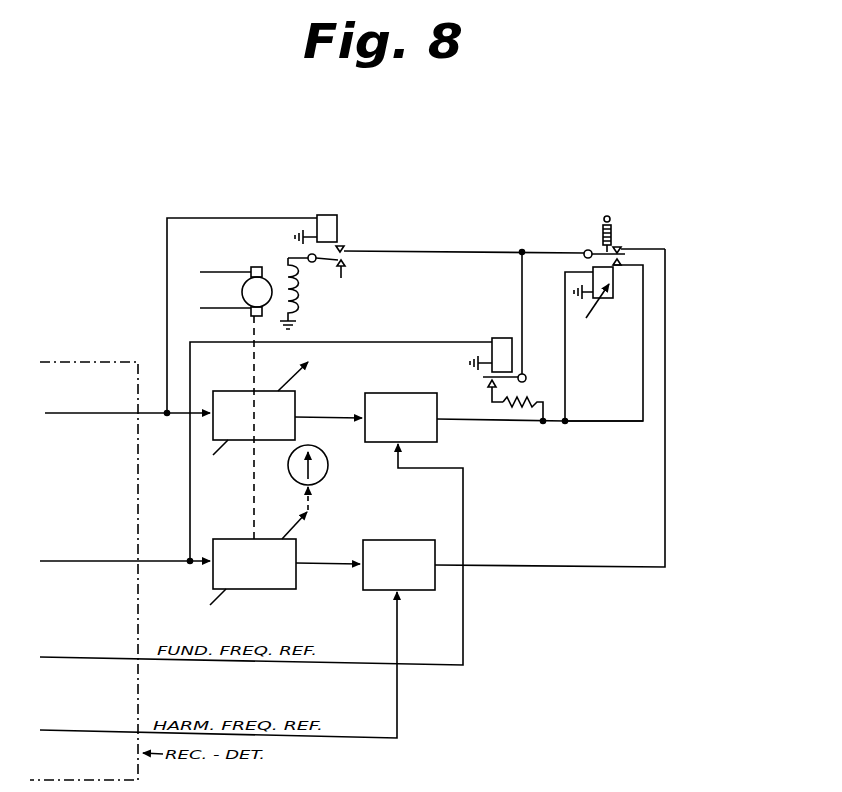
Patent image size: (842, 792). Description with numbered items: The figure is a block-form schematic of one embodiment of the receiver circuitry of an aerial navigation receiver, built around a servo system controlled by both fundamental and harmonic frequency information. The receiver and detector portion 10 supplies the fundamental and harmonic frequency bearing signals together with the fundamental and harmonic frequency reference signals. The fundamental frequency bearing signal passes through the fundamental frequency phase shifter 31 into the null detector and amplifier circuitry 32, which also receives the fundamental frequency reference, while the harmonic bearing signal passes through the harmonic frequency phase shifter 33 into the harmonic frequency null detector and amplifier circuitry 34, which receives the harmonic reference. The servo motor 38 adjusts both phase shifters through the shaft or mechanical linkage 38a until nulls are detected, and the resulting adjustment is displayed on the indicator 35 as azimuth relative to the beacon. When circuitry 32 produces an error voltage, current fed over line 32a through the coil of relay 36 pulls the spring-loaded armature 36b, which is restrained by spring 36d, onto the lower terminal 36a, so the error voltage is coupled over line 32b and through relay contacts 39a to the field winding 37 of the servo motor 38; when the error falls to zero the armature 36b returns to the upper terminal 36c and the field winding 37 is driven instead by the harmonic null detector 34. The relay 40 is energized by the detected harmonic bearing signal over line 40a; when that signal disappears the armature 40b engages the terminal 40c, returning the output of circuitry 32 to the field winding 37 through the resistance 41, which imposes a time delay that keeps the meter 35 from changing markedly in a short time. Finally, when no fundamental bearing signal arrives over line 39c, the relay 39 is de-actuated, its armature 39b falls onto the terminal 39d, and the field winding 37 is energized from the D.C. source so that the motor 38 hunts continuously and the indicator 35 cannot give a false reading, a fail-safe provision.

The receiver and detector portion 10 is at (111, 362).
The fundamental frequency phase shifter 31 is at (243, 390).
The null detector and amplifier circuitry 32 is at (403, 393).
The line 32a is at (565, 372).
The line 32b is at (599, 421).
The harmonic frequency phase shifter 33 is at (236, 539).
The harmonic frequency null detector and amplifier circuitry 34 is at (412, 540).
The indicator 35 is at (326, 472).
The relay 36 is at (592, 303).
The lower terminal 36a is at (624, 268).
The spring-loaded armature 36b is at (585, 251).
The upper terminal 36c is at (622, 248).
The spring 36d is at (613, 228).
The field winding 37 is at (286, 270).
The servo motor 38 is at (262, 298).
The shaft or mechanical linkage 38a is at (252, 470).
The relay 39 is at (340, 221).
The relay contacts 39a is at (346, 250).
The armature 39b is at (313, 262).
The line 39c is at (220, 218).
The terminal 39d is at (349, 262).
The relay 40 is at (500, 337).
The line 40a is at (380, 343).
The armature 40b is at (524, 383).
The terminal 40c is at (489, 385).
The resistance 41 is at (522, 405).